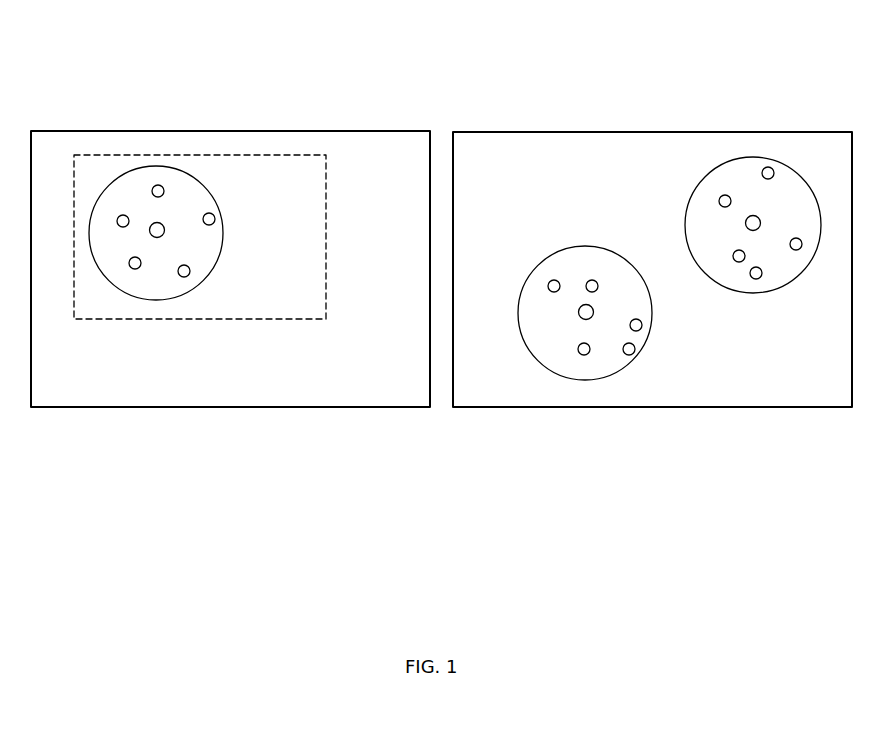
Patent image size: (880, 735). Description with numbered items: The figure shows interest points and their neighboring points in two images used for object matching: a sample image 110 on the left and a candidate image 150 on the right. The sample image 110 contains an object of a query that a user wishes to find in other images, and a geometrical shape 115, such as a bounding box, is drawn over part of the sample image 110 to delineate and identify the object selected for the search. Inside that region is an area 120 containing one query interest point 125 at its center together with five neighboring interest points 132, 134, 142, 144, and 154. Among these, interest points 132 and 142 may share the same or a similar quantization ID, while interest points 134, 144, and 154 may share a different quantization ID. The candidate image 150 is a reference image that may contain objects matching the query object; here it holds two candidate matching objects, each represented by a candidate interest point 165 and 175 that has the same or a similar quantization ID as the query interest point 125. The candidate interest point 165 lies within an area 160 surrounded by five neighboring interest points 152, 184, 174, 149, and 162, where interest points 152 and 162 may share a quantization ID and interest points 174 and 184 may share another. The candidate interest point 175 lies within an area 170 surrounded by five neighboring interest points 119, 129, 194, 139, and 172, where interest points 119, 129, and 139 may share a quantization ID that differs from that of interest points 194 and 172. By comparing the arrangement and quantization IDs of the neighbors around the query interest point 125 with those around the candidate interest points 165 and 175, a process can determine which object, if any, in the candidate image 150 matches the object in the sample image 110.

The sample image 110 is at (280, 407).
The geometrical shape 115 is at (316, 154).
The area 120 is at (212, 256).
The query interest point 125 is at (162, 223).
The neighboring interest point 142 is at (161, 184).
The neighboring interest point 134 is at (119, 214).
The neighboring interest point 132 is at (215, 215).
The neighboring interest point 144 is at (134, 270).
The neighboring interest point 154 is at (190, 272).
The candidate image 150 is at (548, 407).
The area 160 is at (643, 302).
The candidate interest point 165 is at (580, 305).
The neighboring interest point 184 is at (548, 284).
The neighboring interest point 152 is at (594, 279).
The neighboring interest point 174 is at (642, 325).
The neighboring interest point 162 is at (635, 352).
The neighboring interest point 149 is at (578, 352).
The area 170 is at (812, 226).
The candidate interest point 175 is at (751, 216).
The neighboring interest point 129 is at (722, 195).
The neighboring interest point 119 is at (770, 167).
The neighboring interest point 194 is at (733, 251).
The neighboring interest point 139 is at (757, 280).
The neighboring interest point 172 is at (798, 251).